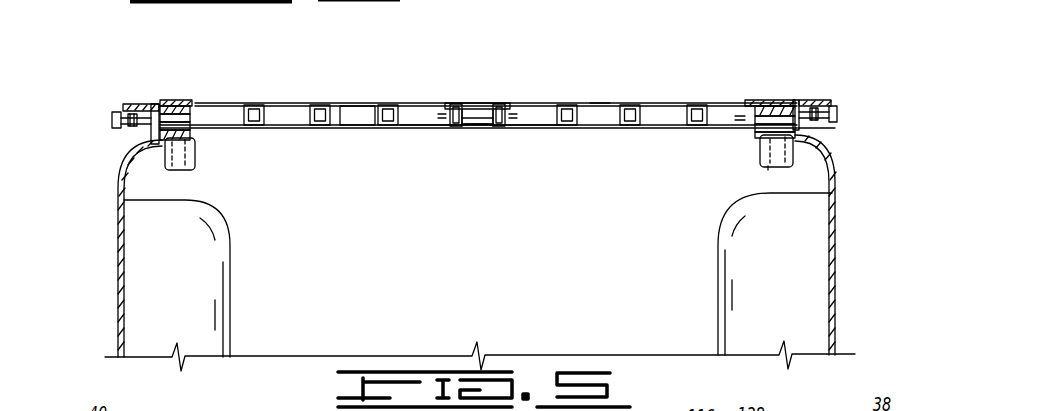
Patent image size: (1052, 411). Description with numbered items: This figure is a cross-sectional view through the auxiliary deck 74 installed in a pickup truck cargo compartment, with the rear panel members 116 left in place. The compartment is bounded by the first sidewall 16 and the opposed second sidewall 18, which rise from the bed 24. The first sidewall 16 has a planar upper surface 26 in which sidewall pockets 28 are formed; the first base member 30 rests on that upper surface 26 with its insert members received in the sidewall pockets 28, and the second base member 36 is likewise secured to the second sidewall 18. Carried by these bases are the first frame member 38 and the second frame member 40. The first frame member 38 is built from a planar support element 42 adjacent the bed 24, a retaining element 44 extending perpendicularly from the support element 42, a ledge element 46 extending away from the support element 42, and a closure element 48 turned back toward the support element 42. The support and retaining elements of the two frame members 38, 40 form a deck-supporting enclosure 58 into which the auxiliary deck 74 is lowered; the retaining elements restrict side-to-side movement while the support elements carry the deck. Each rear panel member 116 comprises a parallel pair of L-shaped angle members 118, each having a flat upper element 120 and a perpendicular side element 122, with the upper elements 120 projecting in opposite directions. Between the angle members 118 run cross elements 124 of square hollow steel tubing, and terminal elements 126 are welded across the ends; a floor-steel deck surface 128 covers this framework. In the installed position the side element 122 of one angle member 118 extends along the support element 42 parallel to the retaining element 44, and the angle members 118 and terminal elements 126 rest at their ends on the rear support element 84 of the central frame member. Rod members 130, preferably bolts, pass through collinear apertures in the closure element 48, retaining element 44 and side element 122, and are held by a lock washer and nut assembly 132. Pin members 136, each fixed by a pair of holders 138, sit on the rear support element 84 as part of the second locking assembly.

The first sidewall 16 is at (833, 225).
The second sidewall 18 is at (118, 238).
The bed 24 is at (415, 356).
The planar upper surface 26 is at (796, 138).
The sidewall pockets 28 is at (770, 172).
The first base member 30 is at (760, 130).
The second base member 36 is at (193, 137).
The first frame member 38 is at (838, 70).
The second frame member 40 is at (123, 104).
The support element 42 is at (748, 127).
The retaining element 44 is at (822, 120).
The ledge element 46 is at (797, 100).
The closure element 48 is at (832, 102).
The deck-supporting enclosure 58 is at (598, 104).
The auxiliary deck 74 is at (470, 78).
The rear support element 84 is at (418, 128).
The rear panel member 116 is at (290, 103).
The L-shaped angle members 118 is at (190, 103).
The upper element 120 is at (468, 104).
The side element 122 is at (453, 128).
The cross elements 124 is at (320, 125).
The terminal elements 126 is at (362, 112).
The deck surface 128 is at (347, 103).
The rod members 130 is at (112, 122).
The lock washer and nut assembly 132 is at (128, 140).
The pin members 136 is at (477, 130).
The holders 138 is at (462, 130).